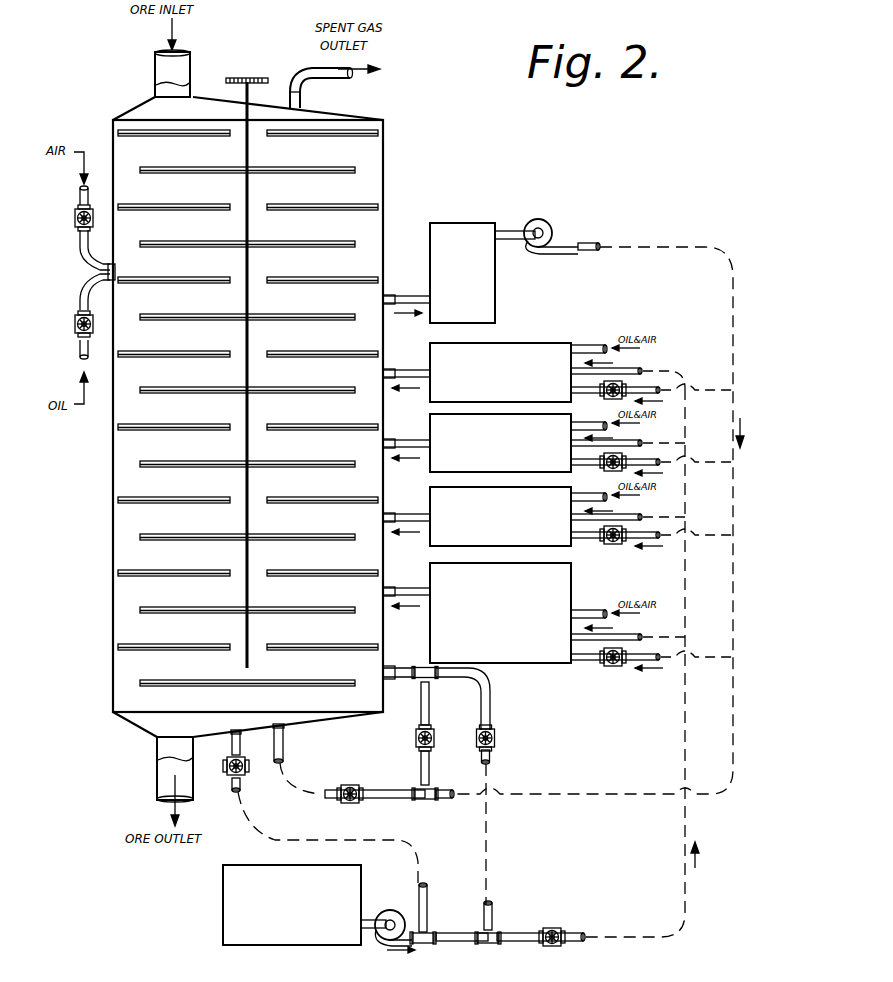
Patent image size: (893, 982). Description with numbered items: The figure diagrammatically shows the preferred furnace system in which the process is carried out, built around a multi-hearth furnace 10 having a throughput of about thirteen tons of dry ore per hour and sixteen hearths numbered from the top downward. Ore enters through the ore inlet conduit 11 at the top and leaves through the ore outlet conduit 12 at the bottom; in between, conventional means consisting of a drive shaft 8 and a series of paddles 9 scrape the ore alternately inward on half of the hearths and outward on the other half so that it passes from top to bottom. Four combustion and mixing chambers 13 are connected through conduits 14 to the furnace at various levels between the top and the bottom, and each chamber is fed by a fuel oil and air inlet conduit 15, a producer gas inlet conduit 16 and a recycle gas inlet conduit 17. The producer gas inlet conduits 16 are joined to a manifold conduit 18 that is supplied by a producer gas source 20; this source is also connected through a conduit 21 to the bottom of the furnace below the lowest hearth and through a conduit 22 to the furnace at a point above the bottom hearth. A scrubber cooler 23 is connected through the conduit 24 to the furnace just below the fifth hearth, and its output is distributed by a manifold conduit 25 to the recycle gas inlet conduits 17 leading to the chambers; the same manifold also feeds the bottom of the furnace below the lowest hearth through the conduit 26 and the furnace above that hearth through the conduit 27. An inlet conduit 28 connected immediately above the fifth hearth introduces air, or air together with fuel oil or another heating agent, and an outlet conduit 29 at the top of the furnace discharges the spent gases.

The drive shaft 8 is at (235, 365).
The paddles 9 is at (248, 385).
The multi-hearth furnace 10 is at (268, 417).
The ore inlet conduit 11 is at (156, 73).
The ore outlet conduit 12 is at (143, 781).
The combustion and mixing chambers 13 is at (485, 505).
The conduits 14 is at (406, 502).
The fuel oil and air inlet conduits 15 is at (581, 467).
The producer gas inlet conduits 16 is at (642, 527).
The recycle gas inlet conduits 17 is at (652, 546).
The manifold conduit 18 is at (606, 667).
The producer gas source 20 is at (225, 908).
The conduit 21 is at (355, 837).
The conduit 22 is at (458, 805).
The scrubber cooler 23 is at (472, 224).
The conduit 24 is at (413, 297).
The manifold conduit 25 is at (580, 243).
The conduit 26 is at (285, 752).
The conduit 27 is at (429, 768).
The inlet conduit 28 is at (95, 270).
The outlet conduit 29 is at (294, 86).